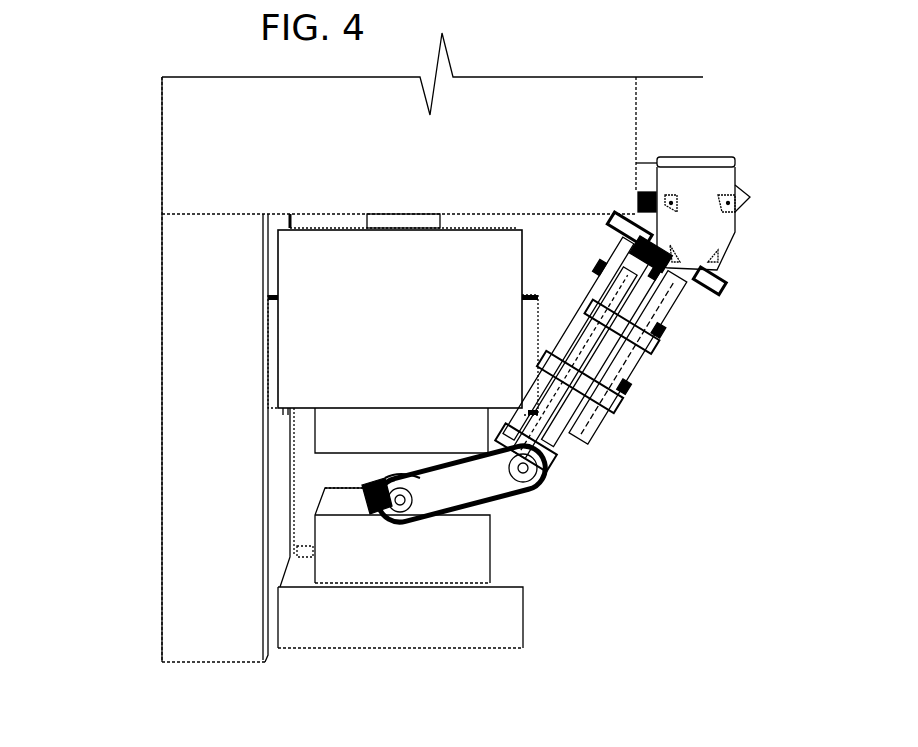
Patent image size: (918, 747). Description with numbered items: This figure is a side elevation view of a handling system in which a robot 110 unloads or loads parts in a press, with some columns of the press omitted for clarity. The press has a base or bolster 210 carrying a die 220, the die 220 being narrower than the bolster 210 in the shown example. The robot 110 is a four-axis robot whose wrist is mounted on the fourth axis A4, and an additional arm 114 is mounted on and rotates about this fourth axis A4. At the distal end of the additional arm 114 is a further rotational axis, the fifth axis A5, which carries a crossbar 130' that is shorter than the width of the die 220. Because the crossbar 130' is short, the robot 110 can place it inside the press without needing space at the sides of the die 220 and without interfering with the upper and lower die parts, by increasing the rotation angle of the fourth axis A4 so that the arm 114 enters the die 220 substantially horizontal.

The robot 110 is at (657, 328).
The additional arm 114 is at (458, 487).
The crossbar 130' is at (245, 443).
The die 220 is at (340, 538).
The bolster 210 is at (297, 613).
The fourth axis A4 is at (541, 467).
The fifth axis A5 is at (425, 518).